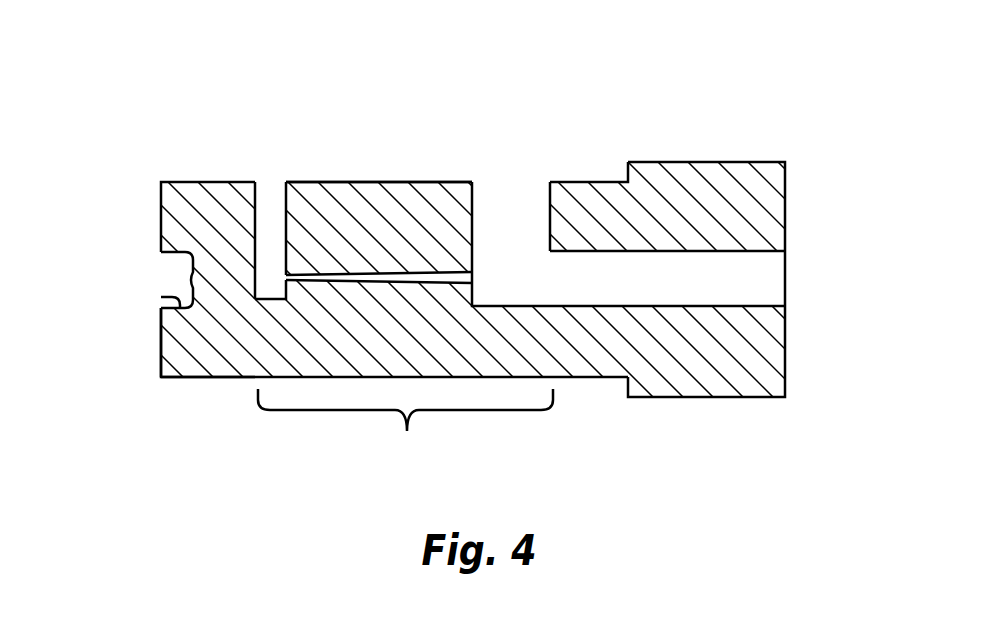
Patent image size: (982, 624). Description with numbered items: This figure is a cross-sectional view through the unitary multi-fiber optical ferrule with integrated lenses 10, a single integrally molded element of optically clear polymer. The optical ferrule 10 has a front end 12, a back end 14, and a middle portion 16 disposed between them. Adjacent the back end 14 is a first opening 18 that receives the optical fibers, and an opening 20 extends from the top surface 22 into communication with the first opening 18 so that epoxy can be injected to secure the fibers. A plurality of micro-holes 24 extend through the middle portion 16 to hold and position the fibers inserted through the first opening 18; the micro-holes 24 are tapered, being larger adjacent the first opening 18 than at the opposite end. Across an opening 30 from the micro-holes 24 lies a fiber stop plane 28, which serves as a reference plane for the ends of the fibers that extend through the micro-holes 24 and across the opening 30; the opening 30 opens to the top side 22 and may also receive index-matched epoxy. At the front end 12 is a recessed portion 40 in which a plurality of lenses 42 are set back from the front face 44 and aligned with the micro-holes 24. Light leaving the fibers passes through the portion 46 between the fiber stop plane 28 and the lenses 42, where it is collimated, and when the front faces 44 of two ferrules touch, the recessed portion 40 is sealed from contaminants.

The unitary multi-fiber optical ferrule with integrated lenses 10 is at (612, 113).
The front end 12 is at (156, 203).
The back end 14 is at (786, 205).
The middle portion 16 is at (405, 431).
The first opening 18 is at (765, 278).
The opening 20 is at (523, 182).
The top surface 22 is at (365, 182).
The micro-holes 24 is at (436, 278).
The fiber stop plane 28 is at (262, 182).
The opening 30 is at (281, 192).
The recessed portion 40 is at (160, 297).
The lenses 42 is at (185, 282).
The front face 44 is at (158, 342).
The portion 46 is at (213, 280).